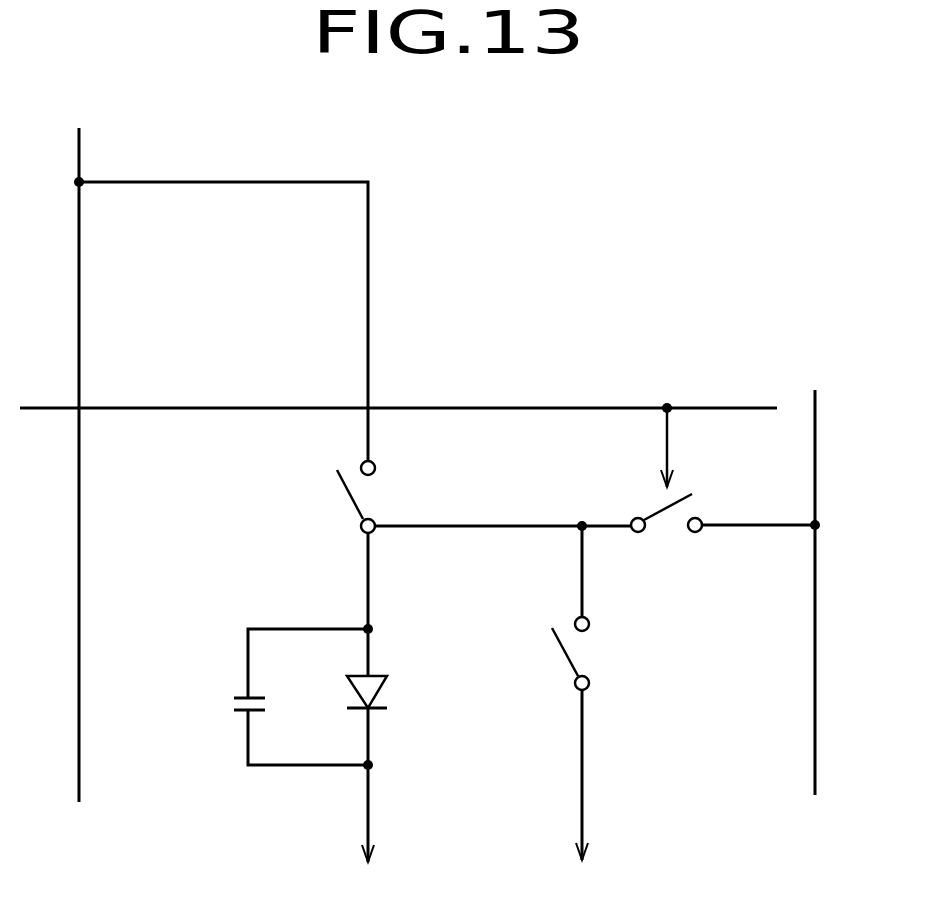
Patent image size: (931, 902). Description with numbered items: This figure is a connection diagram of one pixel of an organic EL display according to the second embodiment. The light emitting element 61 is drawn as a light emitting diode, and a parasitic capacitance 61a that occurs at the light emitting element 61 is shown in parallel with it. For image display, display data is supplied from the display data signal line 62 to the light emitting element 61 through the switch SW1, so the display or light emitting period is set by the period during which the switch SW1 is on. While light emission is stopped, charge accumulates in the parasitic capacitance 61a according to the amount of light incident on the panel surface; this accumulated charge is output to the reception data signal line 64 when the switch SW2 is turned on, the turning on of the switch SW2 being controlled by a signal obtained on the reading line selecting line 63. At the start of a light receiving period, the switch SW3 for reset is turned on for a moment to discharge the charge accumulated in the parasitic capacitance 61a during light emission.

The light emitting element 61 is at (380, 694).
The parasitic capacitance 61a is at (230, 703).
The display data signal line 62 is at (77, 631).
The reading line selecting line 63 is at (718, 406).
The reception data signal line 64 is at (818, 626).
The switch SW1 is at (372, 498).
The switch SW2 is at (666, 532).
The switch for reset SW3 is at (588, 656).